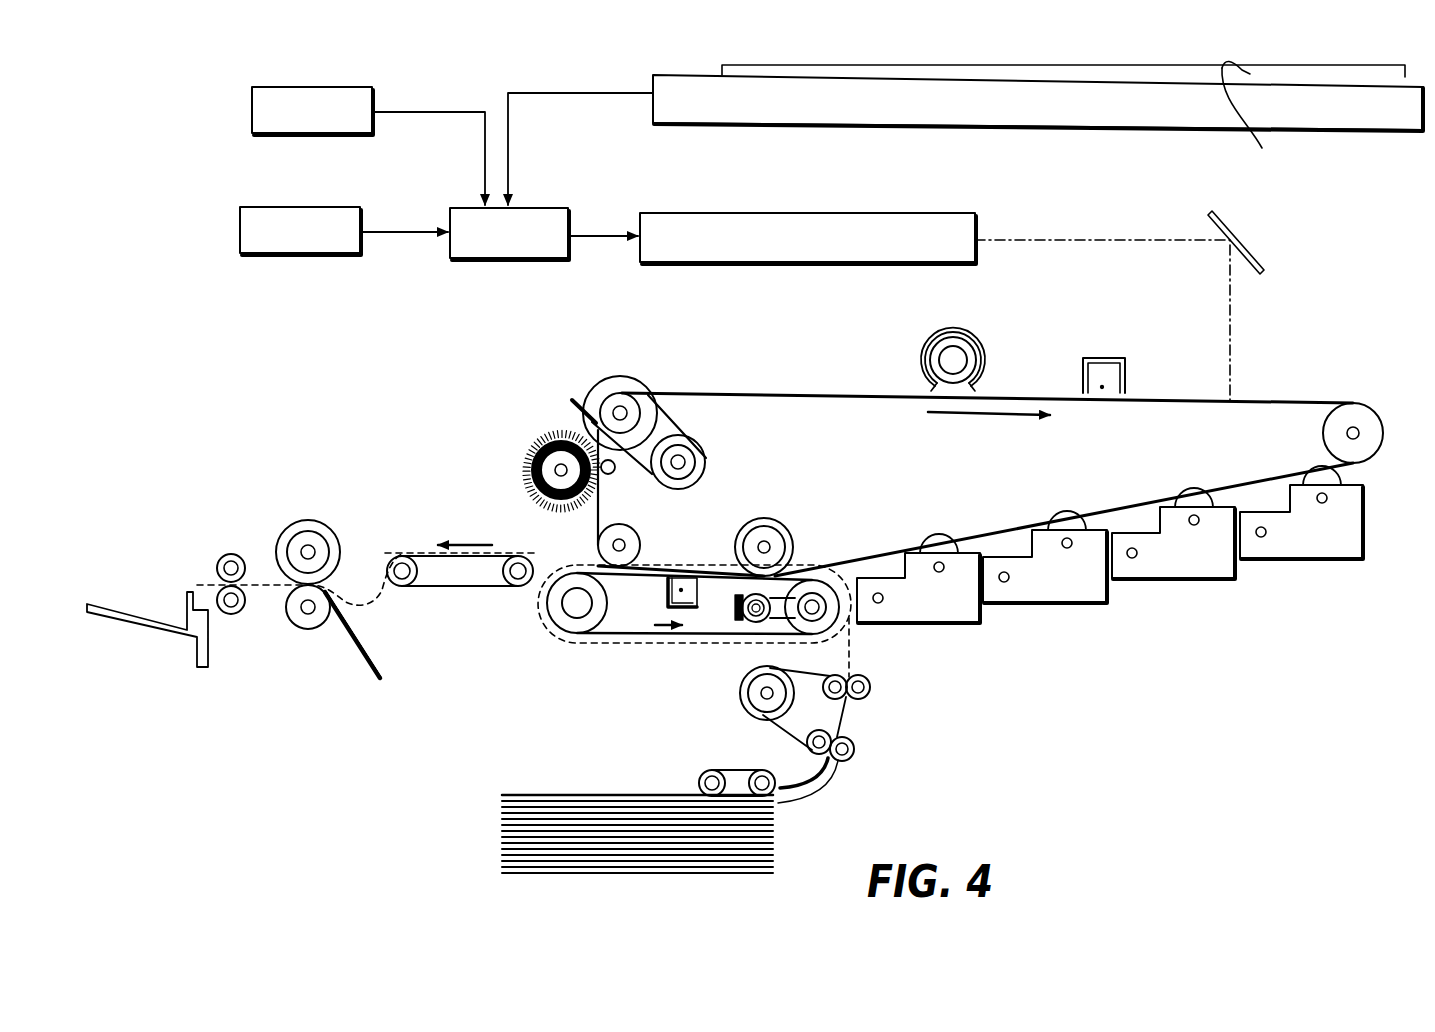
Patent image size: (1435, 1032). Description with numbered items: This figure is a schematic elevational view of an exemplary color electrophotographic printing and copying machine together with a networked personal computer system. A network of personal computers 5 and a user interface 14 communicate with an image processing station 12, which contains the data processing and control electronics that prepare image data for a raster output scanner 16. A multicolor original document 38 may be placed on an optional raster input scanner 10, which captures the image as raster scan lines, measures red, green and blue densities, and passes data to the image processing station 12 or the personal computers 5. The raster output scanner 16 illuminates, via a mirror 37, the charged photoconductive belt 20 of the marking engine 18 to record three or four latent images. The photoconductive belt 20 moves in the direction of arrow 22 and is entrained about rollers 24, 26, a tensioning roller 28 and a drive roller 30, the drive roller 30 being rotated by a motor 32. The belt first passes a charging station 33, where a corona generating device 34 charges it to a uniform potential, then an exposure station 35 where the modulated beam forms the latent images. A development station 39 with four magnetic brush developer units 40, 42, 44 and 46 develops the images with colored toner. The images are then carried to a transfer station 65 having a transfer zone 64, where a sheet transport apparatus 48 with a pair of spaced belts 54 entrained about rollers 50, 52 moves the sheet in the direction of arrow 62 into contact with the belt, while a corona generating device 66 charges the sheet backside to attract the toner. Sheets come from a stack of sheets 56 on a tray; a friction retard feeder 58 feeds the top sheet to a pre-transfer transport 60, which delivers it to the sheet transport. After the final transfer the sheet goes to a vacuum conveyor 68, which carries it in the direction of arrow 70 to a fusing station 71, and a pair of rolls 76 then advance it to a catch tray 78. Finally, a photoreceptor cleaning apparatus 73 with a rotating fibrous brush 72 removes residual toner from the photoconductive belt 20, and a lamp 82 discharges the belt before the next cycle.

The personal computer network 5 is at (218, 102).
The raster input scanner 10 is at (635, 83).
The image processing station 12 is at (572, 200).
The user interface 14 is at (233, 192).
The raster output scanner 16 is at (852, 203).
The marking engine 18 is at (1396, 188).
The photoconductive belt 20 is at (1040, 395).
The direction arrow 22 is at (995, 418).
The stripping roller 24 is at (633, 530).
The roller 26 is at (782, 536).
The tensioning roller 28 is at (1356, 418).
The drive roller 30 is at (602, 390).
The motor 32 is at (706, 462).
The charging station 33 is at (1145, 348).
The corona generating device 34 is at (1115, 358).
The exposure station 35 is at (1249, 388).
The mirror 37 is at (1255, 258).
The original document 38 is at (1249, 117).
The development station 39 is at (1110, 583).
The developer unit 40 is at (1323, 552).
The developer unit 42 is at (1190, 572).
The developer unit 44 is at (1060, 596).
The developer unit 46 is at (933, 616).
The sheet transport apparatus 48 is at (716, 617).
The roller 50 is at (573, 626).
The transfer belt roller 52 is at (825, 613).
The belts 54 is at (590, 570).
The stack of sheets 56 is at (524, 800).
The friction retard feeder 58 is at (740, 770).
The pre-transfer transport 60 is at (843, 718).
The direction arrow 62 is at (666, 628).
The transfer zone 64 is at (692, 555).
The transfer station 65 is at (709, 585).
The corona generating device 66 is at (668, 598).
The vacuum conveyor 68 is at (460, 590).
The direction arrow 70 is at (468, 542).
The fusing station 71 is at (300, 516).
The fibrous brush 72 is at (535, 450).
The photoreceptor cleaning apparatus 73 is at (539, 440).
The rolls 76 is at (233, 553).
The catch tray 78 is at (148, 628).
The lamp 82 is at (925, 360).